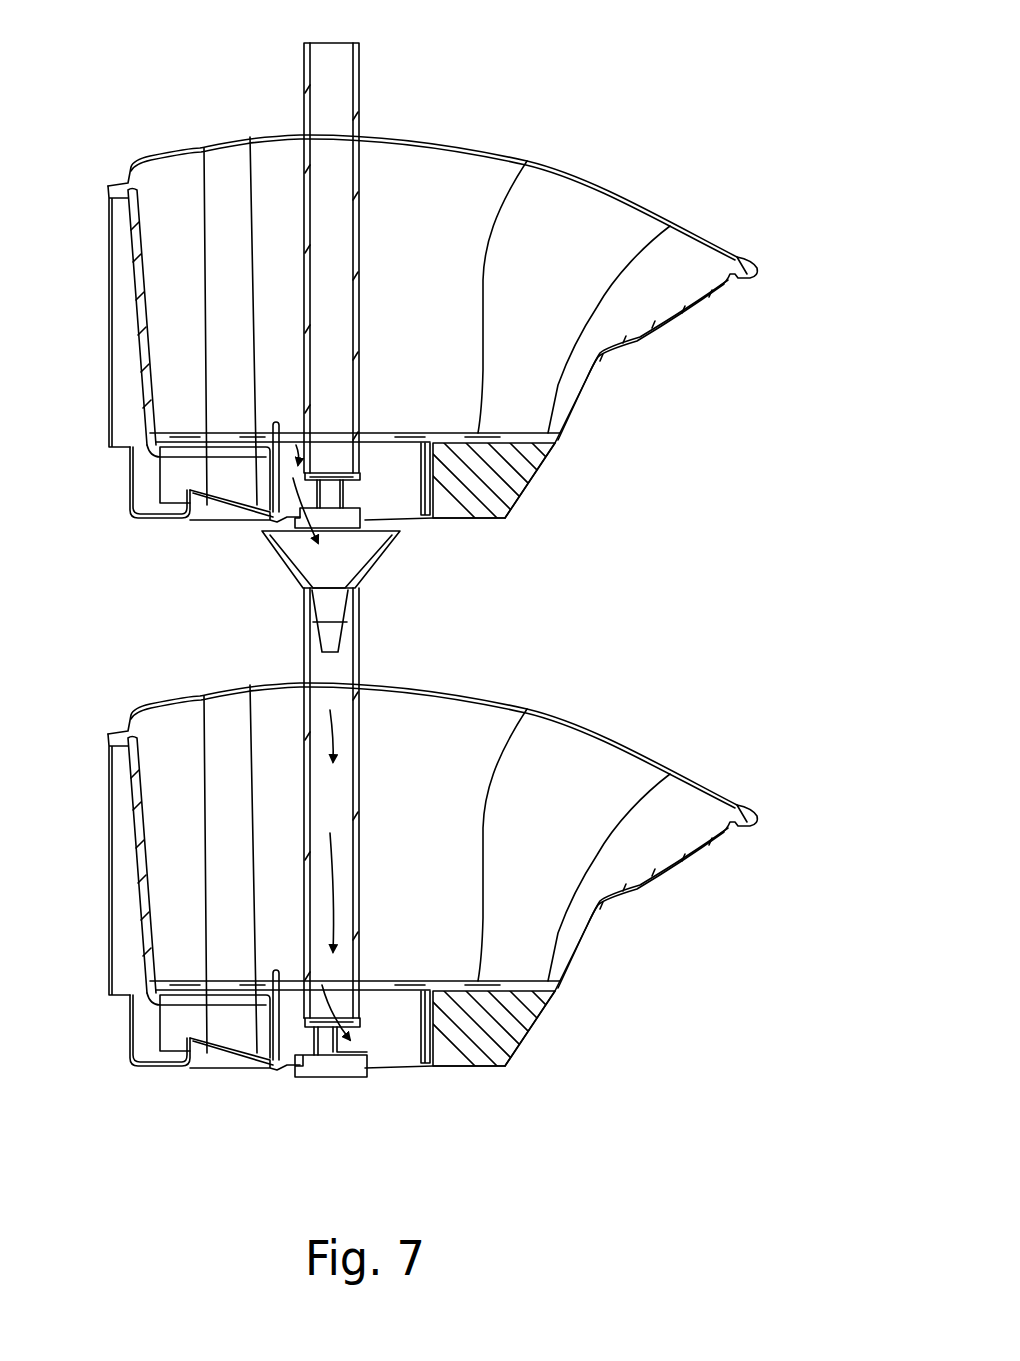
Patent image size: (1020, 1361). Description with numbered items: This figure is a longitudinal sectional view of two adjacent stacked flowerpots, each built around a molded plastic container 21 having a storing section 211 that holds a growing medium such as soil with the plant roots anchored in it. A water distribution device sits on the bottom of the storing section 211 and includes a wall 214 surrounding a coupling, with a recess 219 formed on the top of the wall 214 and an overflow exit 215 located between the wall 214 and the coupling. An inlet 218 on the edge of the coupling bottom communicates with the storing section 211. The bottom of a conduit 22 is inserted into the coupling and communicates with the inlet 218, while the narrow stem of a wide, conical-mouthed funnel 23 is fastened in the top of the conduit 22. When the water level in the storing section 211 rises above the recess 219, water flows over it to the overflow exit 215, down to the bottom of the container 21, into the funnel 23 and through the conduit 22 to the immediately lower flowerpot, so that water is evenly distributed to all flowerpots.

The container 21 is at (693, 313).
The storing section 211 is at (560, 235).
The wall 214 is at (287, 432).
The overflow exit 215 is at (310, 500).
The inlet 218 is at (365, 481).
The recess 219 is at (280, 418).
The conduit 22 is at (360, 63).
The funnel 23 is at (287, 556).